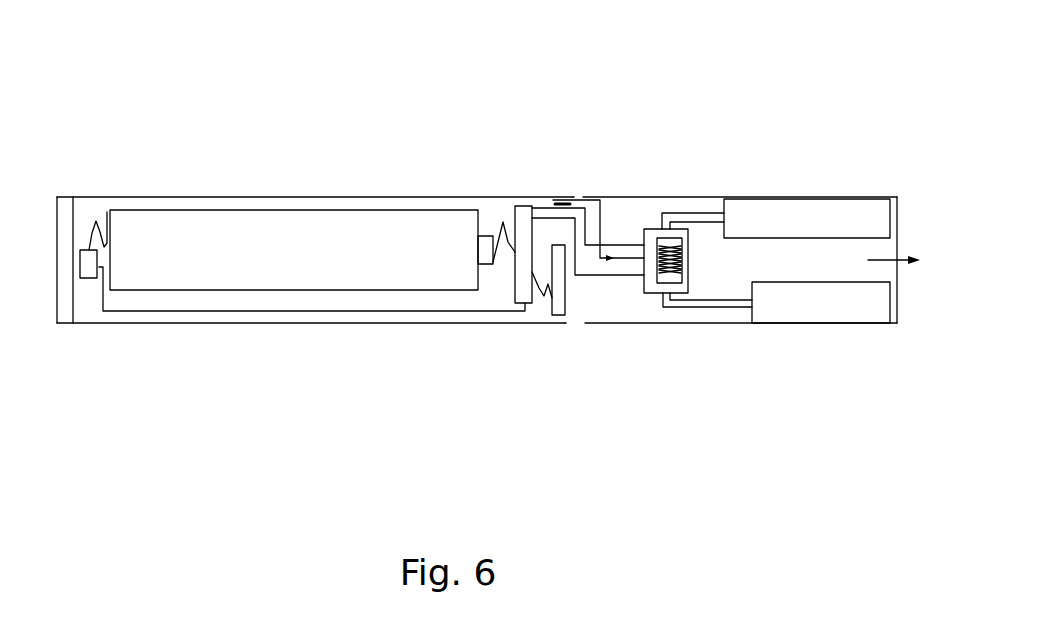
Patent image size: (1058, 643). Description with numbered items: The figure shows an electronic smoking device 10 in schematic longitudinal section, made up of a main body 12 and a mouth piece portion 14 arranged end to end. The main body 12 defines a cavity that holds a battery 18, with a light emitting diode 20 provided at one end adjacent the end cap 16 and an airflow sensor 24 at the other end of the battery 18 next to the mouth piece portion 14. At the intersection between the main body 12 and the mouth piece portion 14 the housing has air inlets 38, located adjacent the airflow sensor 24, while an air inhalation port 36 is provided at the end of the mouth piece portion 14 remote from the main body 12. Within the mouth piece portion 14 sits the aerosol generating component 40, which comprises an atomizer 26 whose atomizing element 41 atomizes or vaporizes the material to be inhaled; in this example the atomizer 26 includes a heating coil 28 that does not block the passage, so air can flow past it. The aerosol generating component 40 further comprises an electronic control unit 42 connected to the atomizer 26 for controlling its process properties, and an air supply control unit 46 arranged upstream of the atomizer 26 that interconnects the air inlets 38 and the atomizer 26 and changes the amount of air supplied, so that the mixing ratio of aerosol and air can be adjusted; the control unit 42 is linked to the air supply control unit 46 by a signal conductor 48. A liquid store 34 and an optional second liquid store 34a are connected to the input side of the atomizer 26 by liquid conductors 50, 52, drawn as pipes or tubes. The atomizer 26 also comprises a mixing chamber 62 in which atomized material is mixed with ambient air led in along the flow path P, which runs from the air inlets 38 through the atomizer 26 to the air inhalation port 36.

The electronic smoking device 10 is at (226, 138).
The main body 12 is at (57, 188).
The mouth piece portion 14 is at (588, 186).
The end cap 16 is at (62, 323).
The battery 18 is at (230, 278).
The light emitting diode (LED) 20 is at (88, 278).
The airflow sensor 24 is at (552, 312).
The atomizer 26 is at (647, 295).
The heating coil 28 is at (668, 196).
The liquid store 34 is at (833, 205).
The liquid store 34a is at (840, 308).
The air inhalation port 36 is at (920, 286).
The air inlets 38 is at (588, 176).
The aerosol generating component 40 is at (599, 94).
The atomizing element 41 is at (664, 272).
The electronic control unit 42 is at (520, 204).
The air supply control unit 46 is at (615, 212).
The signal conductor 48 is at (541, 200).
The liquid conductor 50 is at (703, 217).
The liquid conductor 52 is at (735, 307).
The mixing chamber 62 is at (653, 308).